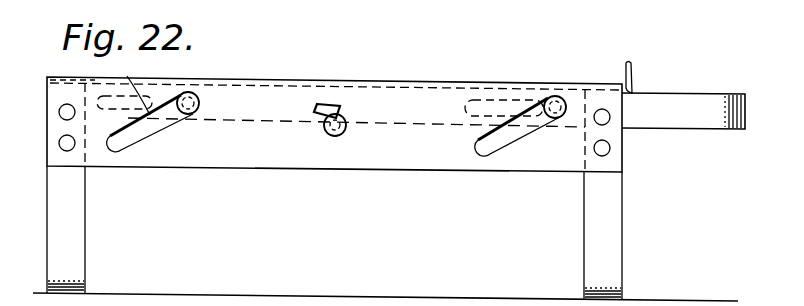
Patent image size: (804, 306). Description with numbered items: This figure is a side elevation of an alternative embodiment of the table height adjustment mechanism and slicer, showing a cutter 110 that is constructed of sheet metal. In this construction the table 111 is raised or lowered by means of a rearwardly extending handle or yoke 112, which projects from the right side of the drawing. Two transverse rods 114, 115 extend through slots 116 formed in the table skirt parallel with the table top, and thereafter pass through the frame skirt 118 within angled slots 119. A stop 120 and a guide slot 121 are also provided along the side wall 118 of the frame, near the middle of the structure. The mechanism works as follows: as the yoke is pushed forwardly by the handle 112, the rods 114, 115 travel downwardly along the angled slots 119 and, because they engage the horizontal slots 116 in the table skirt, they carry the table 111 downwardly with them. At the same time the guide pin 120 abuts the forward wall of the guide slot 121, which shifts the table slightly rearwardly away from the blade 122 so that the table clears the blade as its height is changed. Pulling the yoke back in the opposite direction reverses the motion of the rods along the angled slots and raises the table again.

The cutter 110 is at (412, 79).
The table 111 is at (500, 83).
The handle or yoke 112 is at (702, 103).
The transverse rod 114 is at (563, 120).
The transverse rod 115 is at (191, 114).
The slot 116 is at (158, 95).
The frame skirt 118 is at (433, 148).
The angled slot 119 is at (136, 141).
The stop 120 is at (345, 113).
The guide slot 121 is at (327, 100).
The blade 122 is at (58, 77).